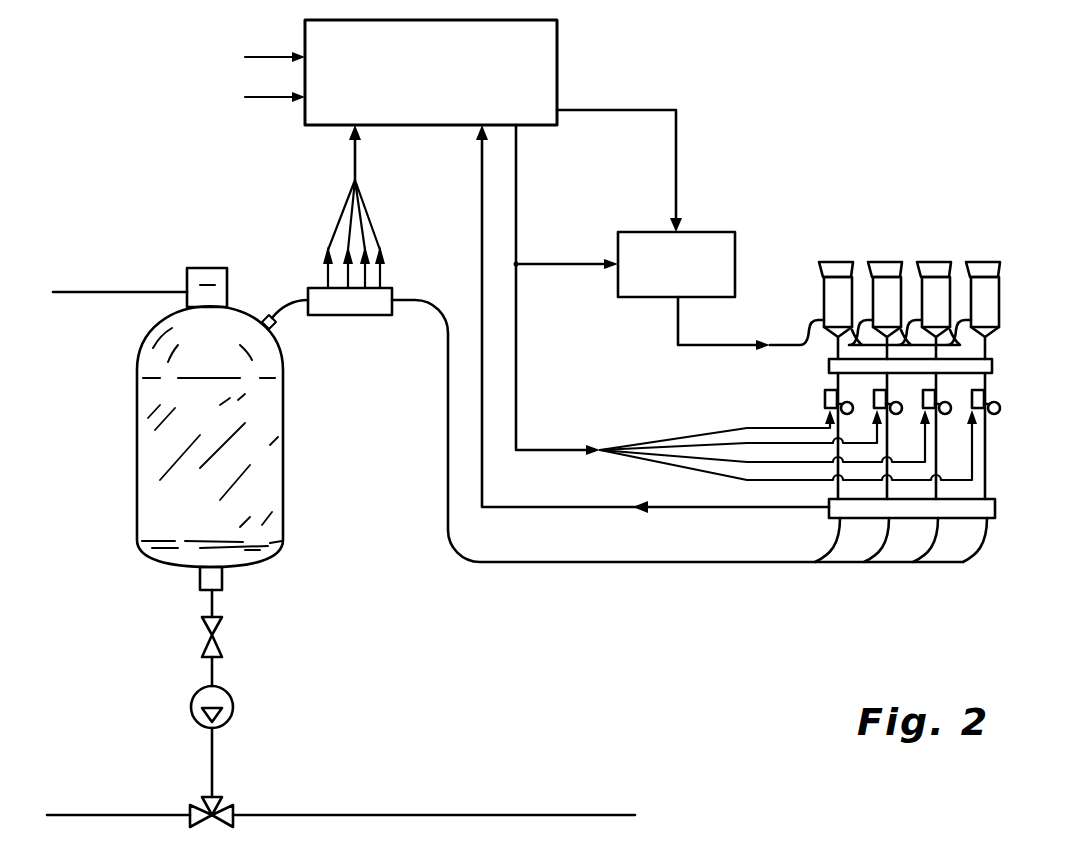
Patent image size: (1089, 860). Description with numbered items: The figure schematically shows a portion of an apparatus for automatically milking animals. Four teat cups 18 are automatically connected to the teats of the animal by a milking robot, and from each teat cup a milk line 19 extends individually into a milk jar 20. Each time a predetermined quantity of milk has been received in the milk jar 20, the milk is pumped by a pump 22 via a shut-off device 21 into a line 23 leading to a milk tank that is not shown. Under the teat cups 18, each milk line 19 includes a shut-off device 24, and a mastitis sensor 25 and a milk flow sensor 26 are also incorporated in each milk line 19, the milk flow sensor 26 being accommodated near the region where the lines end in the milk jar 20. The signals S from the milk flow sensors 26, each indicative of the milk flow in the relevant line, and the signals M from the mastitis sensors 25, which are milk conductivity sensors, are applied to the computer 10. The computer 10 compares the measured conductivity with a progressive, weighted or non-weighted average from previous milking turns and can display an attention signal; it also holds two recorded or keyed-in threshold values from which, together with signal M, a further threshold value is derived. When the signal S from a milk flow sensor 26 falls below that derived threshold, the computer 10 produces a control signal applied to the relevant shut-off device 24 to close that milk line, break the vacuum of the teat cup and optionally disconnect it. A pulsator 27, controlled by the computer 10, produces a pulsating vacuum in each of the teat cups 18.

The computer 10 is at (535, 85).
The teat cups 18 is at (838, 268).
The milk lines 19 is at (845, 562).
The milk jar 20 is at (270, 487).
The shut-off device 21 is at (222, 648).
The pump 22 is at (233, 707).
The line 23 is at (533, 783).
The shut-off device 24 is at (988, 398).
The mastitis sensor 25 is at (998, 507).
The milk flow sensor 26 is at (367, 303).
The pulsator 27 is at (713, 250).